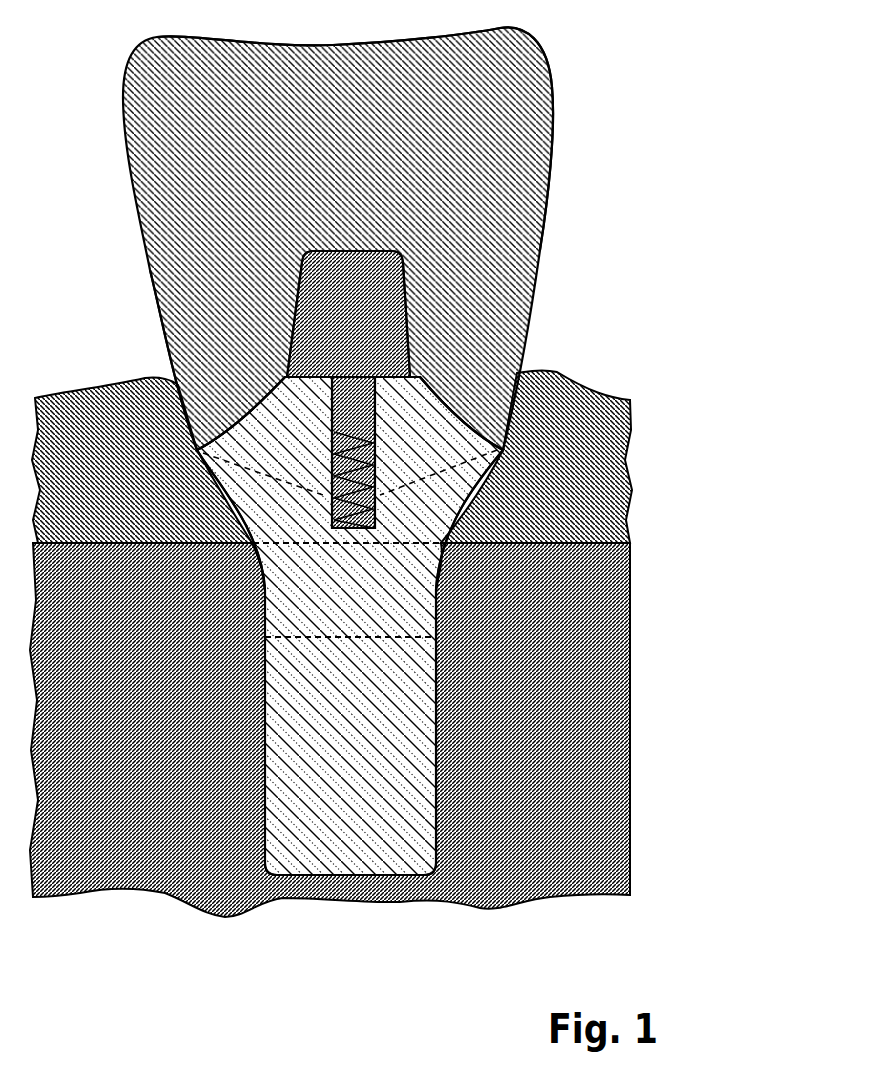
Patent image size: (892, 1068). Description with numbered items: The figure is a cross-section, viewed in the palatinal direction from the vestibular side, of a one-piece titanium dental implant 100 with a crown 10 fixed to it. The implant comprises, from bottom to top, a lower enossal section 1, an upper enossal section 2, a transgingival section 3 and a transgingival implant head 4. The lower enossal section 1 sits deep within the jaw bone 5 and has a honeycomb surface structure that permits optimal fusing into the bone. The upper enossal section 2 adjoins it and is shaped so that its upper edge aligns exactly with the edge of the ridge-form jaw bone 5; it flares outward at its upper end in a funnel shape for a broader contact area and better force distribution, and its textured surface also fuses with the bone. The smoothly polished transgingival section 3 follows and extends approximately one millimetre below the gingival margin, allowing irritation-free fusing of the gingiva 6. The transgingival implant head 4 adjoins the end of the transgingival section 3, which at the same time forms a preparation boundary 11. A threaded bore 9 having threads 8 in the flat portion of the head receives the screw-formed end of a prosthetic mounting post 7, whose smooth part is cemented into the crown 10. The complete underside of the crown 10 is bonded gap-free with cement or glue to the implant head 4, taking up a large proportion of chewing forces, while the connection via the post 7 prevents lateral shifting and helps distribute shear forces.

The lower enossal section 1 is at (350, 845).
The upper enossal section 2 is at (305, 600).
The transgingival section 3 is at (412, 545).
The transgingival implant head 4 is at (168, 372).
The jaw bone 5 is at (635, 572).
The gingiva 6 is at (622, 395).
The prosthetic mounting post 7 is at (548, 168).
The threads 8 is at (530, 335).
The threaded bore 9 is at (505, 305).
The crown 10 is at (505, 160).
The preparation boundary 11 is at (95, 390).
The dental implant 100 is at (393, 511).